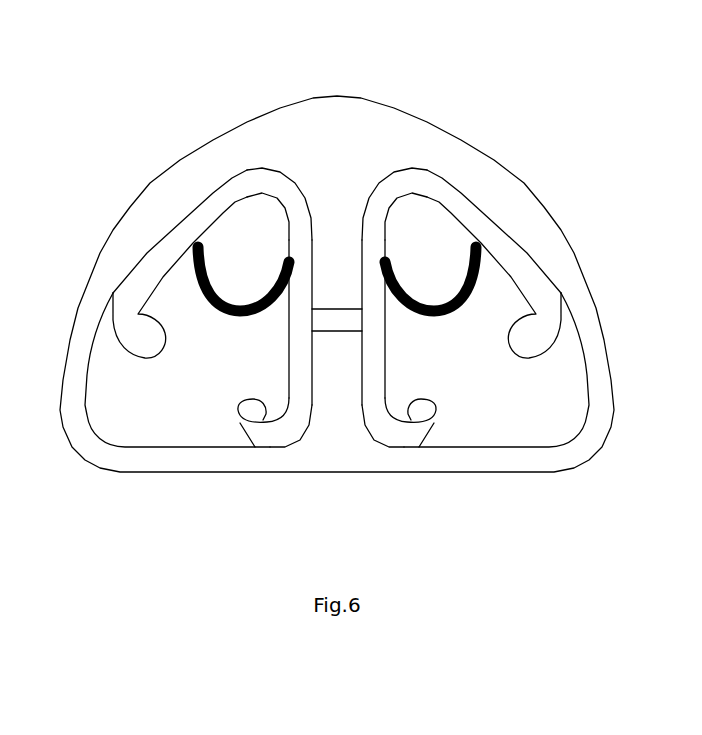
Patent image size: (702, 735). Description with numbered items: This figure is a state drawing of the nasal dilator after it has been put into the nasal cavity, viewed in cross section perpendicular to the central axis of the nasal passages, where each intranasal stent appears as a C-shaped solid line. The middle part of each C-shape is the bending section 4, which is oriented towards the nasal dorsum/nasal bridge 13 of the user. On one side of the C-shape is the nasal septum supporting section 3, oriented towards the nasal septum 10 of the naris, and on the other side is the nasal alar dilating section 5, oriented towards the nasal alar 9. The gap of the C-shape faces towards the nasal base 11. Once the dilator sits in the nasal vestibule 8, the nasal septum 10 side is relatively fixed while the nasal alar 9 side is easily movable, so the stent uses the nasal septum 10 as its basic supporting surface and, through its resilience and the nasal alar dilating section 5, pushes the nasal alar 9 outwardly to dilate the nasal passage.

The nasal alar 9 is at (333, 256).
The nasal alar dilating section 5 is at (337, 206).
The bending section 4 is at (337, 124).
The nasal dorsum/nasal bridge 13 is at (387, 67).
The nasal septum supporting section 3 is at (337, 267).
The nasal vestibule 8 is at (336, 386).
The nasal septum 10 is at (347, 422).
The nasal base 11 is at (337, 411).